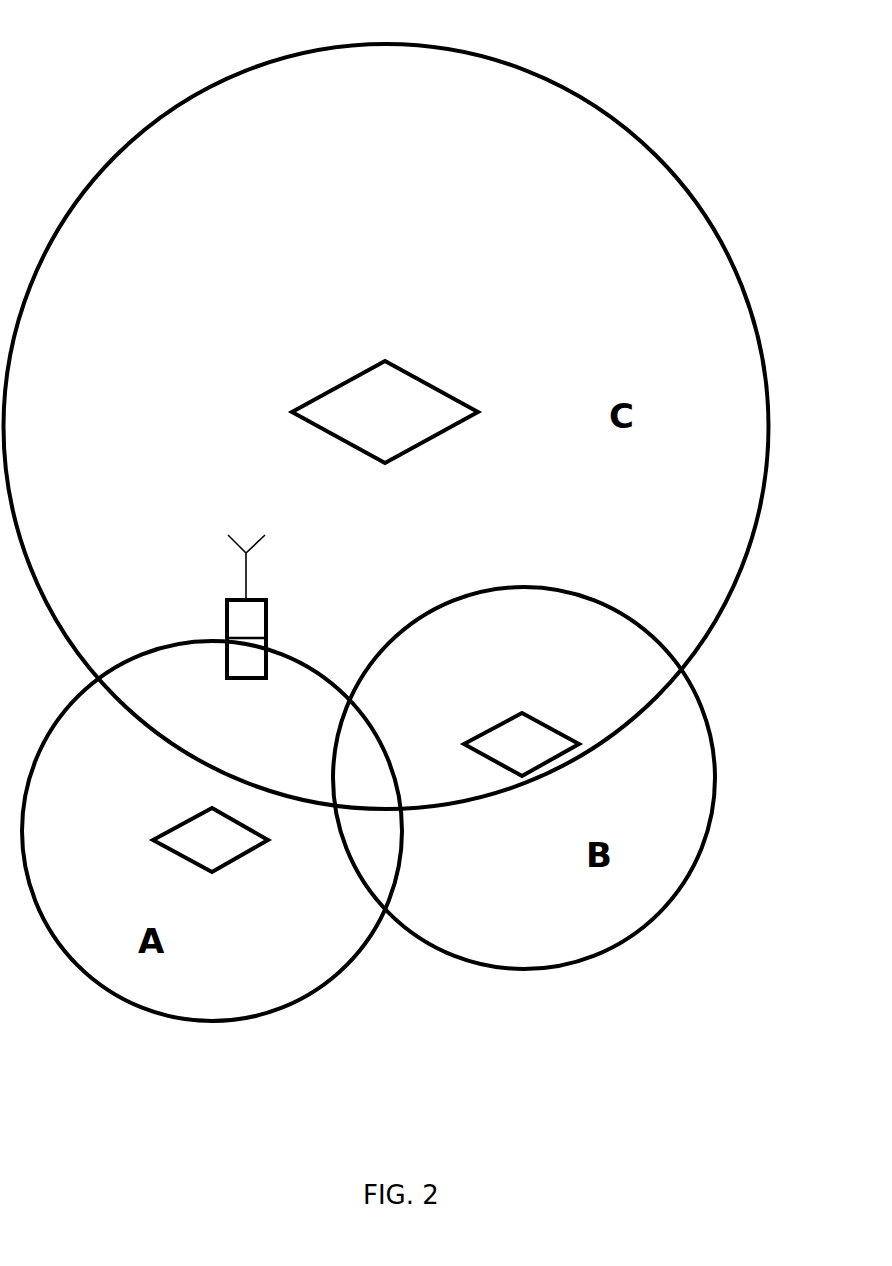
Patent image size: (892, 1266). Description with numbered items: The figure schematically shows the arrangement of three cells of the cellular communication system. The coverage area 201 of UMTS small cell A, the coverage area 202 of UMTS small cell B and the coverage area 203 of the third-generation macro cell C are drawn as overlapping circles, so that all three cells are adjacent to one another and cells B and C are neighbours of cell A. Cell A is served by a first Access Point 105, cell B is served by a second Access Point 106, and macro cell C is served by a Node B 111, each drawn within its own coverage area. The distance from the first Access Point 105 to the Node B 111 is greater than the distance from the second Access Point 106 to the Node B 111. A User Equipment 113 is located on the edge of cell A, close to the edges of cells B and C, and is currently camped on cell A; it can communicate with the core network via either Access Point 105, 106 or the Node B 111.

The coverage area of cell C 203 is at (200, 95).
The coverage area of cell A 201 is at (243, 1022).
The coverage area of cell B 202 is at (590, 950).
The Node B 111 is at (350, 380).
The first Access Point 105 is at (158, 830).
The second Access Point 106 is at (520, 712).
The User Equipment 113 is at (230, 608).